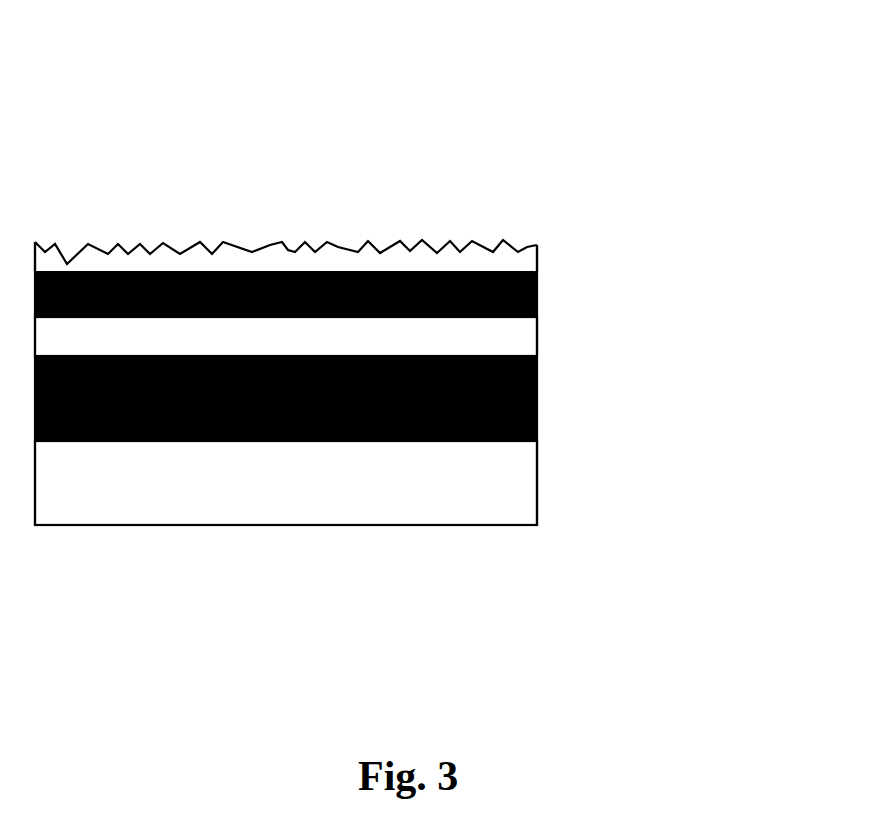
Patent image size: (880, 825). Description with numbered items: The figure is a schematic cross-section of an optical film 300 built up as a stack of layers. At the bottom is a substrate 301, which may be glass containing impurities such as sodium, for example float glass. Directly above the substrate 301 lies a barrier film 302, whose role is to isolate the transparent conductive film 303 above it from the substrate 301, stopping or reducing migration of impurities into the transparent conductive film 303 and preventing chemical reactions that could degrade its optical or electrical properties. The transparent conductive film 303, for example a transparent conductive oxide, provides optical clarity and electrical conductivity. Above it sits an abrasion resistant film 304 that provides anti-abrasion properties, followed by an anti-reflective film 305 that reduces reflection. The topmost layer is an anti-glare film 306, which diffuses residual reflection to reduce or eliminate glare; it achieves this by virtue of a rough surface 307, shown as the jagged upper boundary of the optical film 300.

The optical film 300 is at (410, 125).
The substrate 301 is at (562, 485).
The barrier film 302 is at (562, 420).
The transparent conductive film 303 is at (562, 380).
The abrasion resistant film 304 is at (562, 328).
The anti-reflective film 305 is at (562, 289).
The anti-glare film 306 is at (548, 255).
The rough surface 307 is at (187, 232).